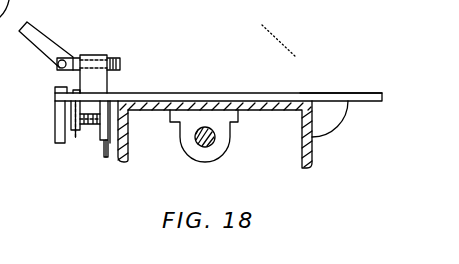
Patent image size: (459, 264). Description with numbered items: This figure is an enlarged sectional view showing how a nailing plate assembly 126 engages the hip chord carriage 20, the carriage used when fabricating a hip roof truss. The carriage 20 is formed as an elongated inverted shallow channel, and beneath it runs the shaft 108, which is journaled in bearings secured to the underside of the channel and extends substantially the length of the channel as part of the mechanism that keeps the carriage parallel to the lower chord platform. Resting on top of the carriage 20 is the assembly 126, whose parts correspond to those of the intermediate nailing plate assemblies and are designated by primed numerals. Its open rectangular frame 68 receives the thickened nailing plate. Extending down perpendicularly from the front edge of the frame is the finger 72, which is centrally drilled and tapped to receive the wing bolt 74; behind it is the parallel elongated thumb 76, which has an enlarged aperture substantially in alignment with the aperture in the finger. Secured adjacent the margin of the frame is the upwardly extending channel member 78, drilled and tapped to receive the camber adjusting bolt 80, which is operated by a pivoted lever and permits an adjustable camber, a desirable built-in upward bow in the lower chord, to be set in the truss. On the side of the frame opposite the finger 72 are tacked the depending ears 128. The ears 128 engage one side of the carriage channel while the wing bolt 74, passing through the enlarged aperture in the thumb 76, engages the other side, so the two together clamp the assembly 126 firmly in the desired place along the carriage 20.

The camber adjusting bolt 80 is at (72, 62).
The channel member 78 is at (98, 58).
The wing bolt 74 is at (57, 130).
The finger 72 is at (77, 134).
The thumb 76 is at (105, 142).
The open rectangular frame 68 is at (198, 93).
The shaft 108 is at (205, 147).
The hip chord carriage 20 is at (300, 148).
The nailing plate assemblies 126 is at (300, 93).
The depending ears 128 is at (333, 128).